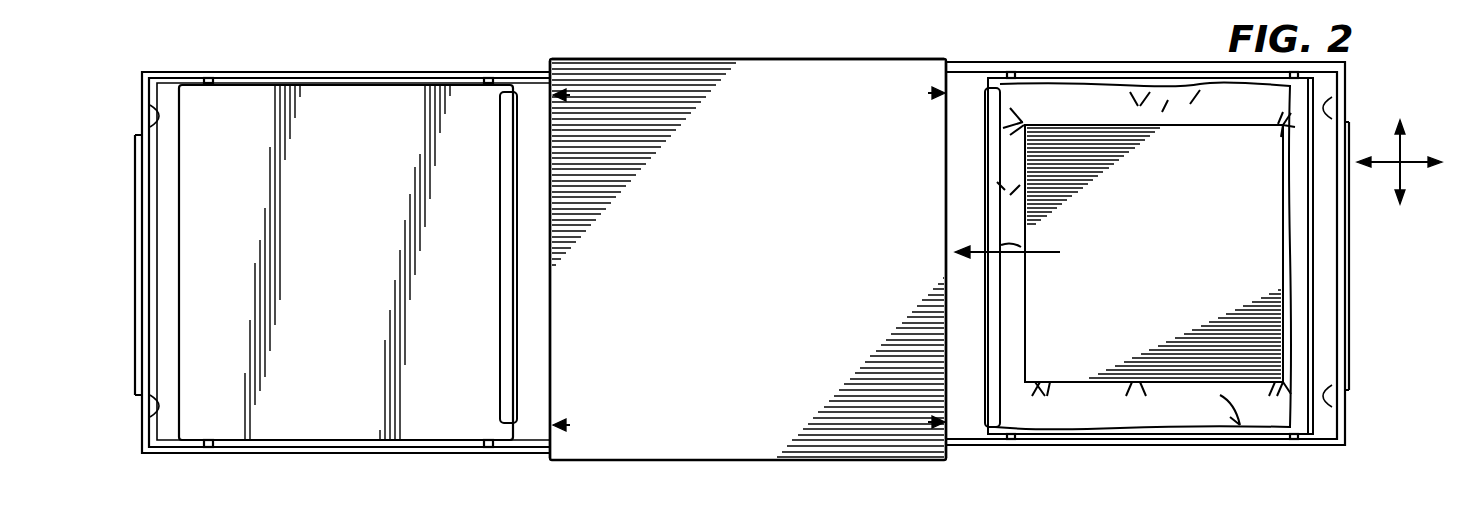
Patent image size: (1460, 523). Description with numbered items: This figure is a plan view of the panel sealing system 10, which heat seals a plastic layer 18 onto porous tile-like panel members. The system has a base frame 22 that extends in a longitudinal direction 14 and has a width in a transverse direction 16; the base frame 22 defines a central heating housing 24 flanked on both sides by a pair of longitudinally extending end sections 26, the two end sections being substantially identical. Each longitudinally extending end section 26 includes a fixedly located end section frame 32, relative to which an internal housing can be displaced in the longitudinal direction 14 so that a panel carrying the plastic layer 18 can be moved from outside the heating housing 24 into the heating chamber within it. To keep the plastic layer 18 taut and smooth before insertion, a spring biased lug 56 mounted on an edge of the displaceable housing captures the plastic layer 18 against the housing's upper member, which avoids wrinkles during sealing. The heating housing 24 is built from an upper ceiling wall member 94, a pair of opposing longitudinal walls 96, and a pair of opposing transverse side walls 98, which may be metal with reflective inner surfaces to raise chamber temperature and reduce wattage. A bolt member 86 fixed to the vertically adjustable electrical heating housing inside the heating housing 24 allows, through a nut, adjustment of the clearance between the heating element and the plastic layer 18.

The panel sealing system 10 is at (1375, 69).
The longitudinal direction 14 is at (1408, 164).
The transverse direction 16 is at (1398, 152).
The plastic layer 18 is at (1168, 110).
The base frame 22 is at (958, 64).
The heating housing 24 is at (762, 263).
The longitudinally extending end section 26 is at (1050, 61).
The end section frame 32 is at (1346, 443).
The spring biased lug 56 is at (500, 250).
The bolt member 86 is at (562, 424).
The heat housing upper ceiling wall member 94 is at (852, 72).
The heat housing opposing longitudinal walls 96 is at (556, 315).
The heat housing opposing transverse side walls 98 is at (718, 59).